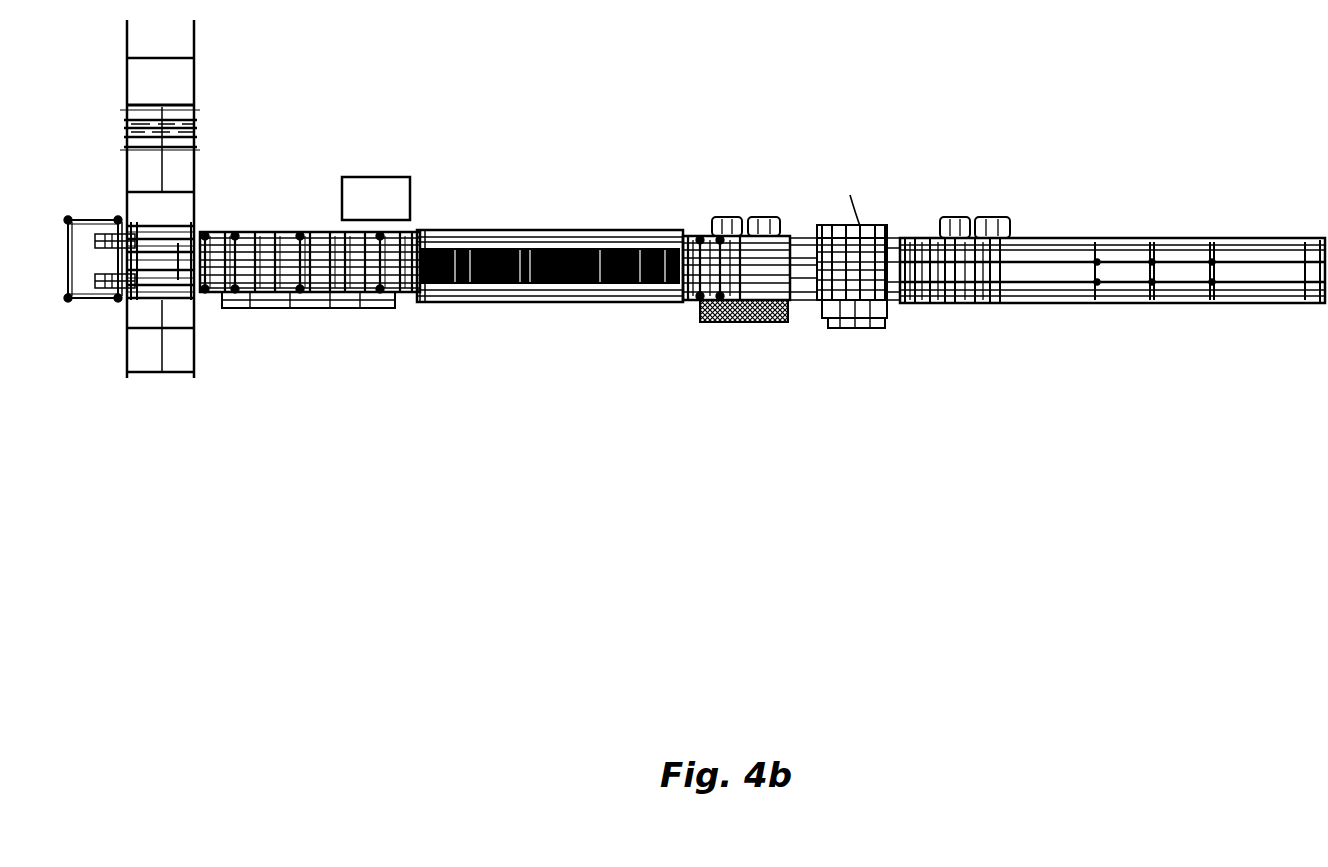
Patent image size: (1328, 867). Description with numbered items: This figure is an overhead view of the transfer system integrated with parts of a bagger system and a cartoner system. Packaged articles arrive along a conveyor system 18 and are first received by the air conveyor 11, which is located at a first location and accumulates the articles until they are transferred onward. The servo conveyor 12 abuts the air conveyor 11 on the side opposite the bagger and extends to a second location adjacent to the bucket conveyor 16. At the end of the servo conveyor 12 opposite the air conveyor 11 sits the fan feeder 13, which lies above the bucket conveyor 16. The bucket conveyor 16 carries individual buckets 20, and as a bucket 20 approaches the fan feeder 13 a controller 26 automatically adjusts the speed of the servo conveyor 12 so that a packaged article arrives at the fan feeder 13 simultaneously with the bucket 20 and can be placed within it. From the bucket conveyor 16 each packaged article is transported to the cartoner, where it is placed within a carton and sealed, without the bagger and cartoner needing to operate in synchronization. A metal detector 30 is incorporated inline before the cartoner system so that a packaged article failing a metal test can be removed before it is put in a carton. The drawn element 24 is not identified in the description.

The air conveyor 11 is at (550, 303).
The servo conveyor 12 is at (334, 308).
The fan feeder 13 is at (92, 300).
The bucket conveyor 16 is at (200, 173).
The conveyor system 18 is at (1062, 305).
The bucket 20 is at (199, 78).
The drive unit 24 is at (745, 328).
The controller 26 is at (410, 192).
The metal detector 30 is at (855, 328).